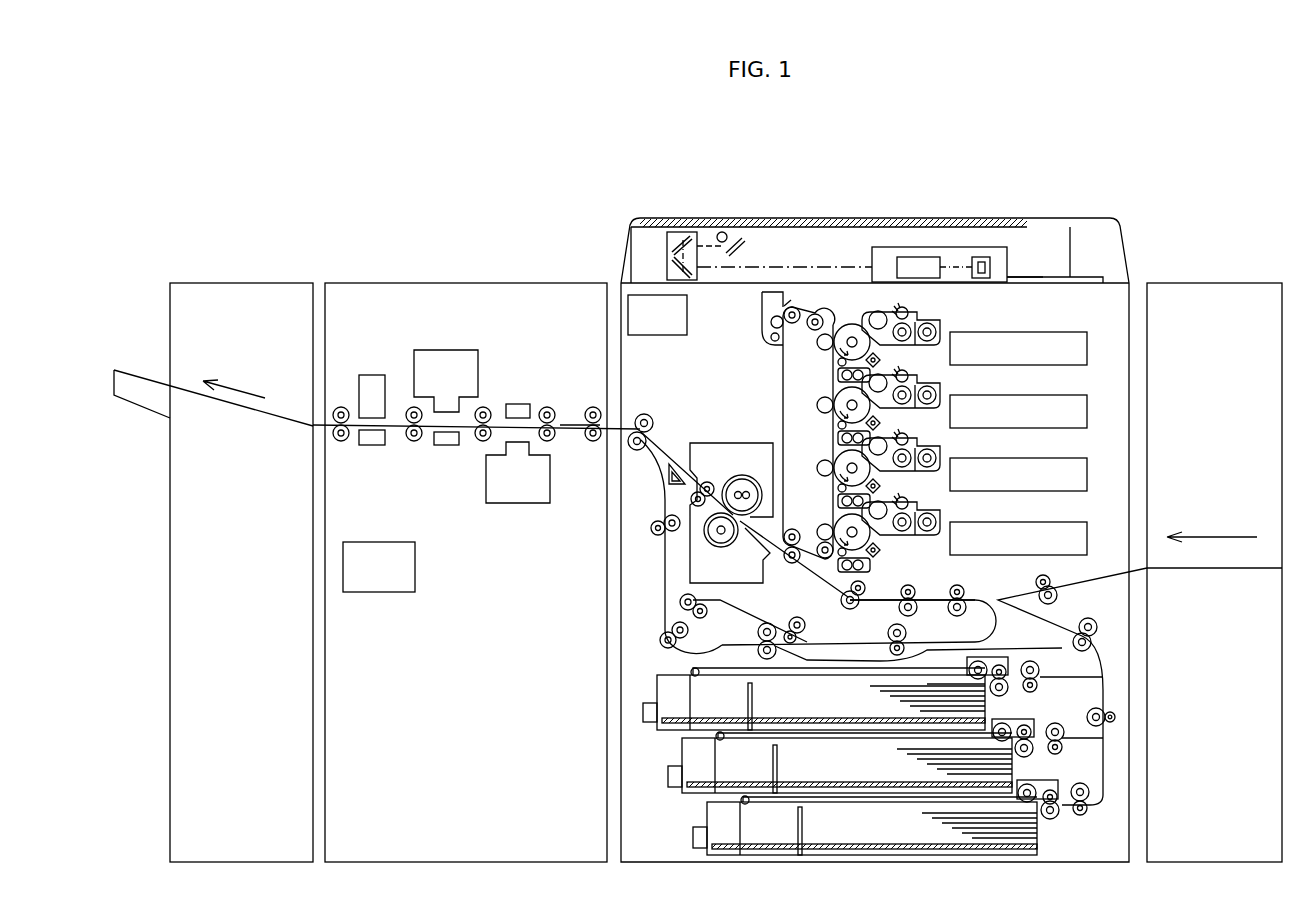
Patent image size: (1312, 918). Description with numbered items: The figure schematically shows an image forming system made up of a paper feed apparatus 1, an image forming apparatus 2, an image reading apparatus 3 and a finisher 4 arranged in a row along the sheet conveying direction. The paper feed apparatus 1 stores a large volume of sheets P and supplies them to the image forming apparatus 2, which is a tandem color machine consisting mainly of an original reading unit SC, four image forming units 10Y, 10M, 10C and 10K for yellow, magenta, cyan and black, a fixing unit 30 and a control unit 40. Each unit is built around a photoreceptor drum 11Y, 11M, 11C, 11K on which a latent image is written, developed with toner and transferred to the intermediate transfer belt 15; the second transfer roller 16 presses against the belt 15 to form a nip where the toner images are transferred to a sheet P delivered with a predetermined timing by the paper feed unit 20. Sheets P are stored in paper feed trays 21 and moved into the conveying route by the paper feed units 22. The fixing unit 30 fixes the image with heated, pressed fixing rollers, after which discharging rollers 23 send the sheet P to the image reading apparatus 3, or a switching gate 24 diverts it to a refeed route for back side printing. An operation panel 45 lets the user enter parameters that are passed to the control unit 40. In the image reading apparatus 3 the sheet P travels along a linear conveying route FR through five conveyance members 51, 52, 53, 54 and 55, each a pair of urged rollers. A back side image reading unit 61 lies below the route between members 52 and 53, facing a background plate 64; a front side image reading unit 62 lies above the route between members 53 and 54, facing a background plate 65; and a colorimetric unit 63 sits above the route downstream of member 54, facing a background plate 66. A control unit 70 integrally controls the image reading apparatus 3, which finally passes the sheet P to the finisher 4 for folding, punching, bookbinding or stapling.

The paper feed apparatus 1 is at (1233, 283).
The image forming apparatus 2 is at (1101, 213).
The image reading apparatus 3 is at (457, 283).
The finisher 4 is at (256, 283).
The image forming unit 10Y is at (953, 326).
The image forming unit 10M is at (953, 389).
The image forming unit 10C is at (953, 452).
The image forming unit 10K is at (953, 516).
The photoreceptor drum 11Y is at (847, 326).
The photoreceptor drum 11M is at (837, 394).
The photoreceptor drum 11C is at (837, 457).
The photoreceptor drum 11K is at (837, 521).
The intermediate transfer belt 15 is at (782, 370).
The second transfer roller 16 is at (792, 564).
The paper feed unit 20 is at (943, 593).
The paper feed tray 21 is at (656, 712).
The paper feed unit 22 is at (1005, 656).
The discharging rollers 23 is at (652, 415).
The switching gate 24 is at (674, 463).
The fixing unit 30 is at (735, 442).
The control unit 40 is at (652, 337).
The operation panel 45 is at (1043, 277).
The conveyance member 51 is at (592, 406).
The conveyance member 52 is at (549, 405).
The conveyance member 53 is at (484, 444).
The conveyance member 54 is at (409, 408).
The conveyance member 55 is at (341, 443).
The back side image reading unit 61 is at (518, 505).
The front side image reading unit 62 is at (452, 349).
The colorimetric unit 63 is at (369, 374).
The background plate 64 is at (519, 403).
The background plate 65 is at (445, 447).
The background plate 66 is at (373, 447).
The control unit 70 is at (378, 594).
The conveying route FR is at (568, 437).
The sheet P is at (927, 684).
The original reading unit SC is at (850, 249).